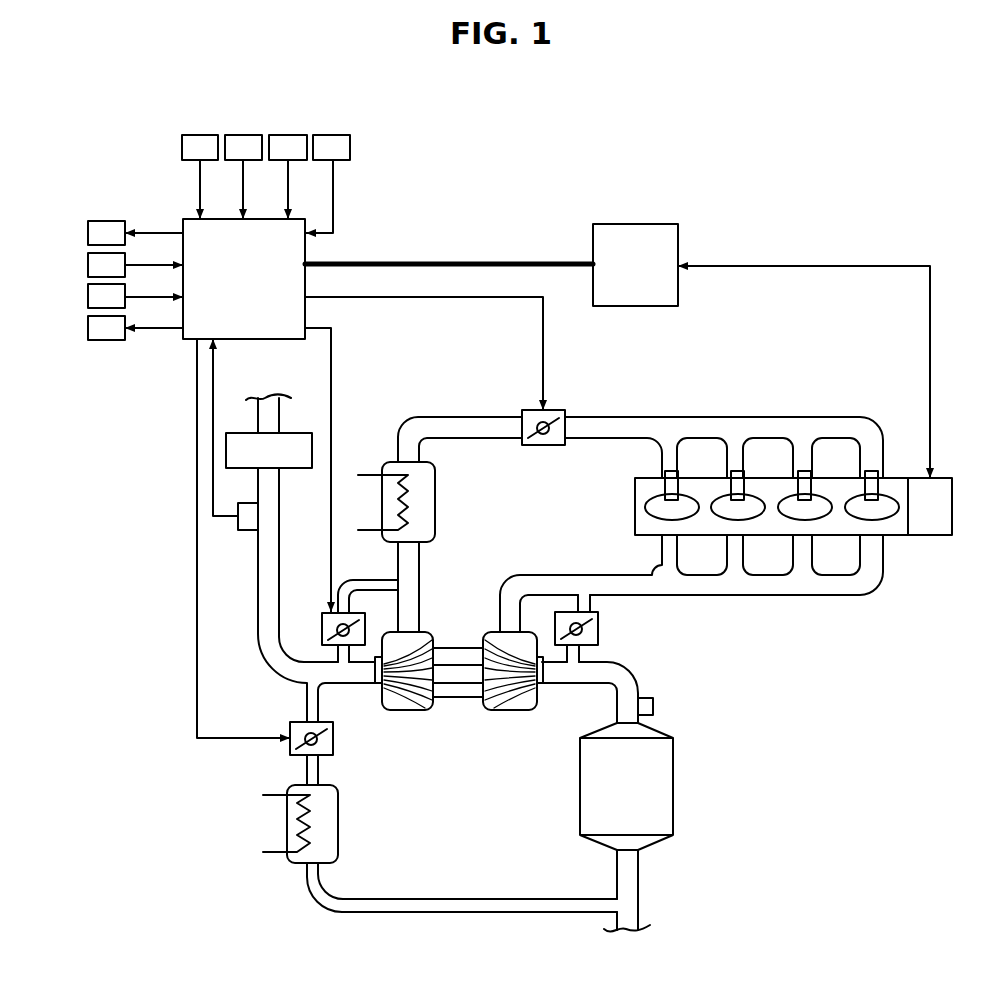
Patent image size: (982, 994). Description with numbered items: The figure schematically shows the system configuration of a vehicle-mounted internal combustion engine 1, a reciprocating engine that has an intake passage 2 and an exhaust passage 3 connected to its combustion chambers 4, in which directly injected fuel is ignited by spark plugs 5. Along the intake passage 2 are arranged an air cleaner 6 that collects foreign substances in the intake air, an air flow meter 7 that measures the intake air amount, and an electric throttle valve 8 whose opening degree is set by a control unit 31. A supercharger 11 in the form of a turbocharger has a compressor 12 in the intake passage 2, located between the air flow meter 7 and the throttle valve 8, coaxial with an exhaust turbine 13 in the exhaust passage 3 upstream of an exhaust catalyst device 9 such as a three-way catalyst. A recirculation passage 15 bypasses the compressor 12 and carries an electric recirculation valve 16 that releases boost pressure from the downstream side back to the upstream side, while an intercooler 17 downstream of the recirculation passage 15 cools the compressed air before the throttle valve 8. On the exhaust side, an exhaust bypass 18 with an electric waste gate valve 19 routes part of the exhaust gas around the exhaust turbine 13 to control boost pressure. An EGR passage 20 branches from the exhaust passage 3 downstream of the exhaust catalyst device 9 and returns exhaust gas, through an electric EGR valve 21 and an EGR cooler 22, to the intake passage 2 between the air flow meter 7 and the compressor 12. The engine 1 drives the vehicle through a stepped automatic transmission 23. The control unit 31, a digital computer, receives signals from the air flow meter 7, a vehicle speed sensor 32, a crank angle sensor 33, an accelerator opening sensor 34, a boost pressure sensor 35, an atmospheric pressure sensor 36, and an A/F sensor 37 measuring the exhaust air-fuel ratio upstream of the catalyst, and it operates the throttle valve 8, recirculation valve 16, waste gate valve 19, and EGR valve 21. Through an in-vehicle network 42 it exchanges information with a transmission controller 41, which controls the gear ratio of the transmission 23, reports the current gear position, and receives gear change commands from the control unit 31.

The internal combustion engine 1 is at (877, 420).
The intake passage 2 is at (258, 603).
The exhaust passage 3 is at (628, 689).
The combustion chambers 4 is at (728, 516).
The spark plugs 5 is at (88, 328).
The air cleaner 6 is at (233, 433).
The air flow meter 7 is at (246, 530).
The electric throttle valve 8 is at (532, 409).
The exhaust catalyst device 9 is at (648, 797).
The supercharger 11 is at (459, 744).
The compressor 12 is at (407, 692).
The exhaust turbine 13 is at (515, 692).
The recirculation passage 15 is at (376, 582).
The electric recirculation valve 16 is at (328, 613).
The intercooler 17 is at (388, 462).
The exhaust bypass 18 is at (577, 652).
The electric waste gate valve 19 is at (106, 220).
The EGR passage 20 is at (376, 898).
The electric EGR valve 21 is at (334, 740).
The EGR cooler 22 is at (297, 863).
The transmission 23 is at (932, 537).
The control unit 31 is at (194, 232).
The vehicle speed sensor 32 is at (88, 297).
The crank angle sensor 33 is at (88, 262).
The accelerator opening sensor 34 is at (199, 134).
The boost pressure sensor 35 is at (244, 134).
The atmospheric pressure sensor 36 is at (290, 134).
The A/F sensor 37 is at (333, 134).
The transmission controller 41 is at (634, 224).
The in-vehicle network 42 is at (449, 262).